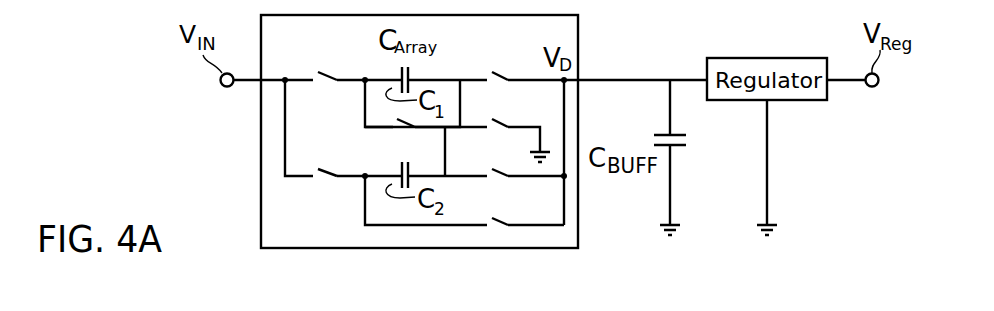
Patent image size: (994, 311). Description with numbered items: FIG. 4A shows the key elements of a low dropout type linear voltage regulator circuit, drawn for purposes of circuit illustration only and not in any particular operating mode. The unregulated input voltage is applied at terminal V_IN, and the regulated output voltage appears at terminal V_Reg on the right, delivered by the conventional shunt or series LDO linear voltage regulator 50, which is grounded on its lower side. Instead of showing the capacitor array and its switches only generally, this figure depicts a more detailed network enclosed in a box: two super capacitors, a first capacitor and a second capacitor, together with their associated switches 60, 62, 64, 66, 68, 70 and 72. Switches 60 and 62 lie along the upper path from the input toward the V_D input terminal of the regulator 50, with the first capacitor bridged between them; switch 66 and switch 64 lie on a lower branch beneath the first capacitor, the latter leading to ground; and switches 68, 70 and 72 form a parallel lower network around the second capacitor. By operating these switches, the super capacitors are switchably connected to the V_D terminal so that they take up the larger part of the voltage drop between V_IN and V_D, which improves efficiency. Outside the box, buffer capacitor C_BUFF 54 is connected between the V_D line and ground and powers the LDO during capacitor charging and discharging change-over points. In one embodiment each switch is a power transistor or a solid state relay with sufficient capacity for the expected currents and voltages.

The linear voltage regulator 50 is at (787, 58).
The capacitor C_BUFF 54 is at (684, 146).
The switch 60 is at (318, 71).
The switch 62 is at (508, 71).
The switch 64 is at (506, 123).
The switch 66 is at (382, 127).
The switch 68 is at (336, 179).
The switch 70 is at (509, 178).
The switch 72 is at (524, 228).